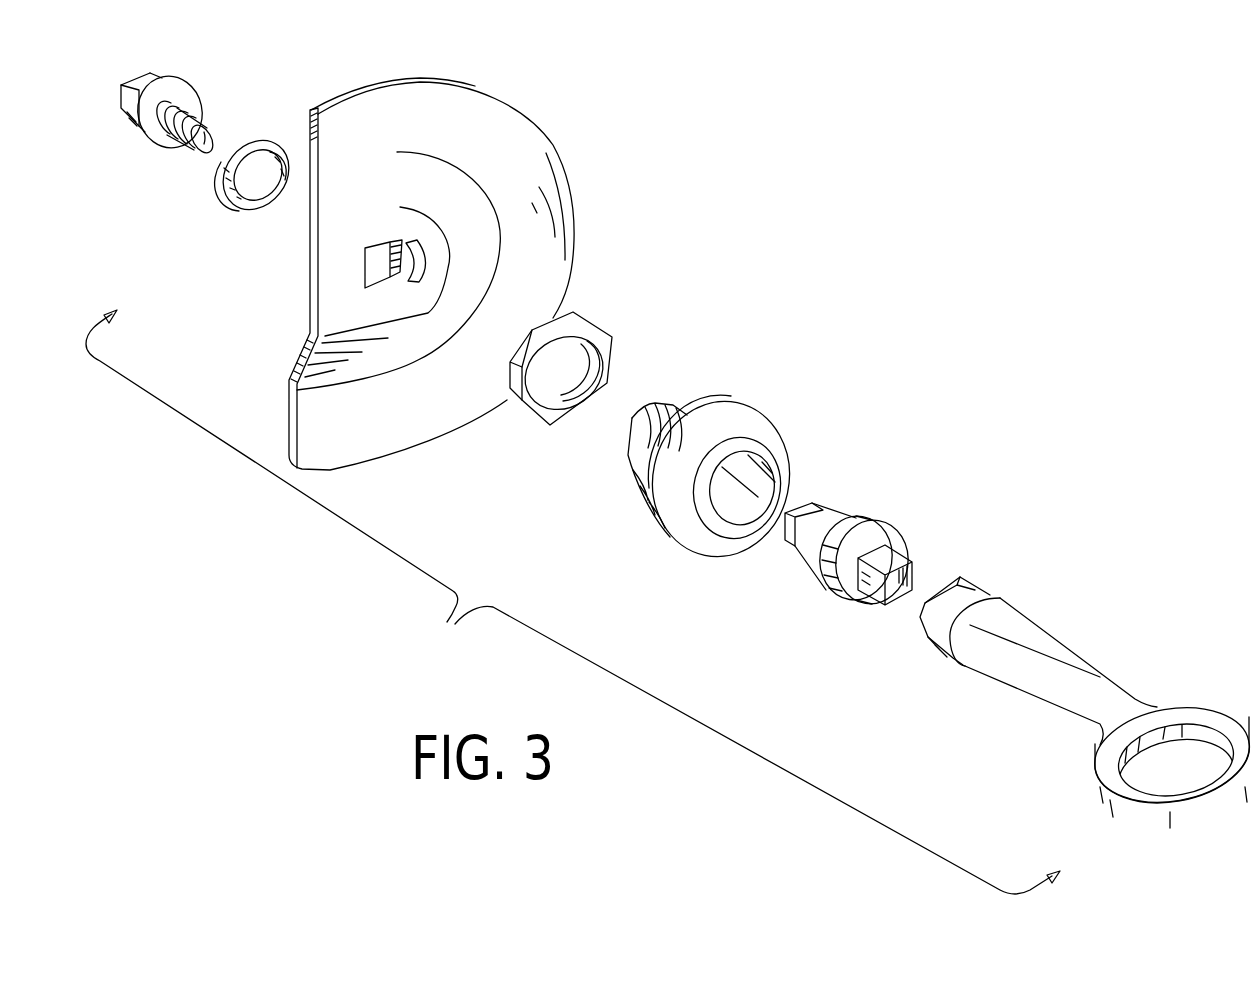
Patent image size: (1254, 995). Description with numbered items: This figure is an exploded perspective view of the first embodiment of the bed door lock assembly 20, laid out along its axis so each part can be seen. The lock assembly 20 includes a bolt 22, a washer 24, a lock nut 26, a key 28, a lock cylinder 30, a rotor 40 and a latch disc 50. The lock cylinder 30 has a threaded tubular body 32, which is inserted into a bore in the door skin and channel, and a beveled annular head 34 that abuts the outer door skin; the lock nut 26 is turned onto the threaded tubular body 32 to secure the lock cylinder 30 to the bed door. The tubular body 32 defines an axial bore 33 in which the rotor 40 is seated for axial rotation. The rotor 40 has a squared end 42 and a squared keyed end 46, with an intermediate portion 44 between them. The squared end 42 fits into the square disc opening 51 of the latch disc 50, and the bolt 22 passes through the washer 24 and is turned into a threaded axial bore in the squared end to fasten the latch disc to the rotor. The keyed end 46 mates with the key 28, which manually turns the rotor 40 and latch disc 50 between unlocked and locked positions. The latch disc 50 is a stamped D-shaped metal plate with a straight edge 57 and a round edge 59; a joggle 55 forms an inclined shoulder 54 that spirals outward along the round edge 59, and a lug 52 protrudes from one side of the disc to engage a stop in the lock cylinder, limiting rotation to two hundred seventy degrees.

The lock assembly 20 is at (573, 602).
The bolt 22 is at (190, 84).
The washer 24 is at (240, 203).
The lock nut 26 is at (610, 336).
The key 28 is at (1082, 658).
The lock cylinder 30 is at (752, 456).
The threaded tubular body 32 is at (680, 412).
The axial bore 33 is at (748, 509).
The beveled annular head 34 is at (780, 453).
The rotor 40 is at (856, 579).
The squared end 42 is at (835, 523).
The square nub 44 is at (793, 537).
The squared keyed end 46 is at (893, 561).
The latch disc 50 is at (428, 283).
The square disc opening 51 is at (382, 257).
The lug 52 is at (425, 262).
The inclined shoulder 54 is at (370, 443).
The joggle 55 is at (298, 357).
The straight edge 57 is at (468, 86).
The round edge 59 is at (313, 262).